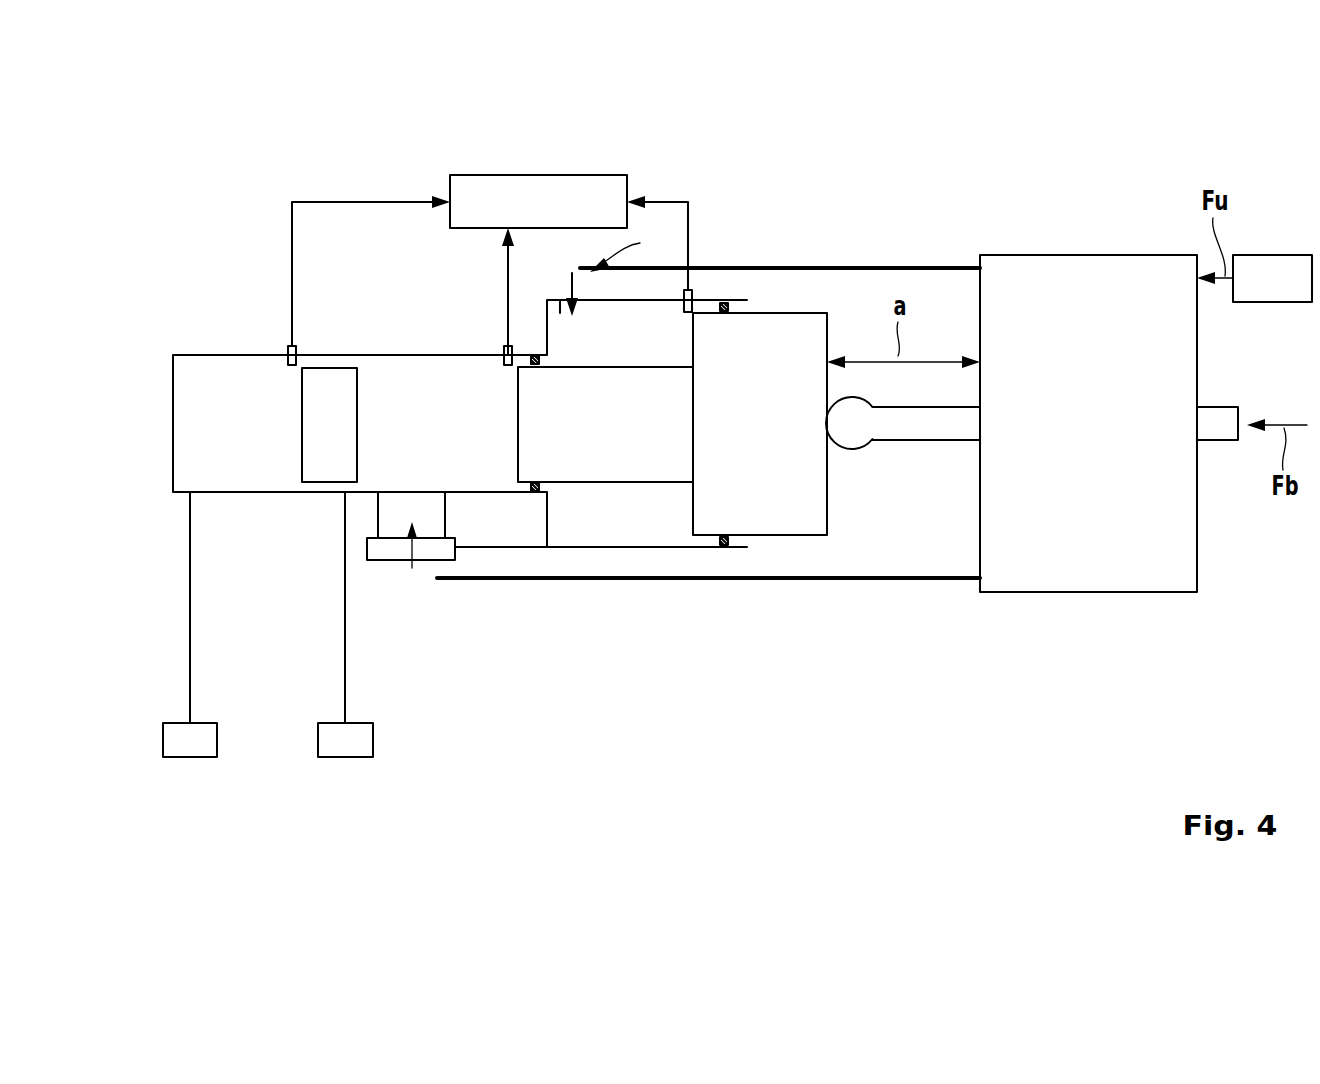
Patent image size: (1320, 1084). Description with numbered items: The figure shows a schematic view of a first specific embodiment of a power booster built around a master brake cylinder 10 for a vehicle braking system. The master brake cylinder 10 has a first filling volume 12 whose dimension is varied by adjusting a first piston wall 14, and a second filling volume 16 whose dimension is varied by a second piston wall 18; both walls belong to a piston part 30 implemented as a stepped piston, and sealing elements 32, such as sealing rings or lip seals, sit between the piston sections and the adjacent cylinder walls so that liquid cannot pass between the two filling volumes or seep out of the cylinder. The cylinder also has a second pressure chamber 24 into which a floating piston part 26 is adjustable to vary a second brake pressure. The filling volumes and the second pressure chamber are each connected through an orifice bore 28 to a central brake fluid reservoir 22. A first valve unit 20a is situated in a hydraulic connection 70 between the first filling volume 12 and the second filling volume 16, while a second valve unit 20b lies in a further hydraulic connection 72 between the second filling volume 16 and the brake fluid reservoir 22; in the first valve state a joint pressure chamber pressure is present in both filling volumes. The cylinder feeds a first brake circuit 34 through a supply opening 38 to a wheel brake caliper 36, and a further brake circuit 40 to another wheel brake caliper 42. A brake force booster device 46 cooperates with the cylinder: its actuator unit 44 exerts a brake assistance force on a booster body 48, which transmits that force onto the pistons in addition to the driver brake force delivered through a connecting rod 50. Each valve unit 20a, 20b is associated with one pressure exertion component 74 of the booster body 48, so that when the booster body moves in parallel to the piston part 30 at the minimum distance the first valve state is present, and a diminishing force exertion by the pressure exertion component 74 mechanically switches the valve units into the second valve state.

The master brake cylinder 10 is at (150, 474).
The first filling volume 12 is at (412, 353).
The first piston wall 14 is at (516, 424).
The second filling volume 16 is at (597, 349).
The second piston wall 18 is at (691, 338).
The first valve unit 20a is at (384, 562).
The second valve unit 20b is at (568, 292).
The brake fluid reservoir 22 is at (540, 175).
The second pressure chamber 24 is at (248, 353).
The floating piston part 26 is at (301, 424).
The orifice bore 28 is at (297, 350).
The piston part 30 is at (829, 486).
The sealing element 32 is at (533, 354).
The brake circuit 34 is at (368, 695).
The wheel brake caliper 36 is at (345, 758).
The supply opening 38 is at (345, 494).
The brake circuit 40 is at (215, 640).
The wheel brake caliper 42 is at (190, 758).
The actuator unit 44 is at (1268, 255).
The brake force booster device 46 is at (977, 212).
The booster body 48 is at (1088, 594).
The connecting rod 50 is at (925, 442).
The hydraulic connection 70 is at (500, 550).
The further hydraulic connection 72 is at (632, 246).
The pressure exertion component 74 is at (819, 267).